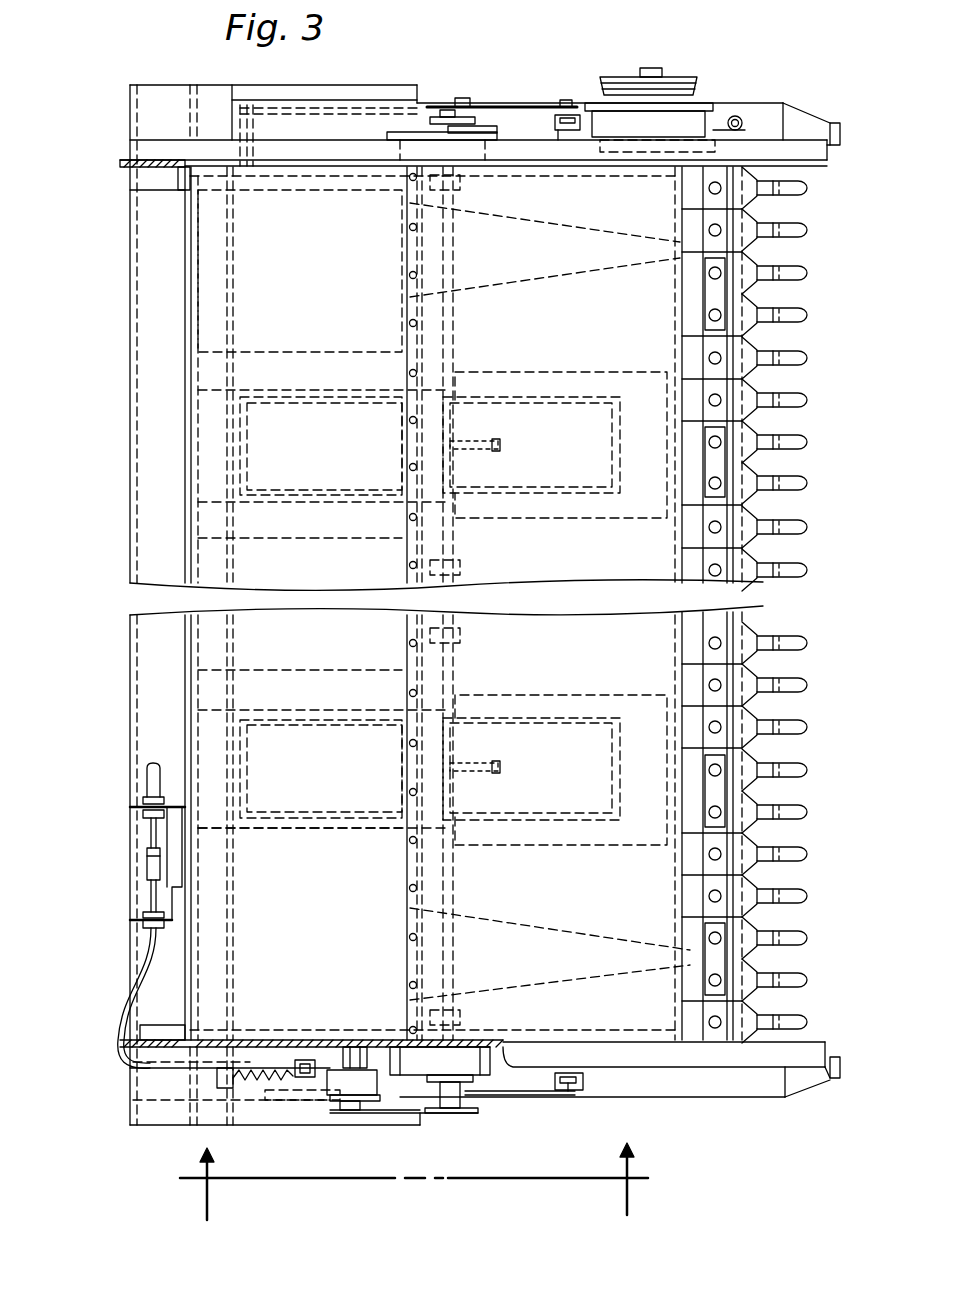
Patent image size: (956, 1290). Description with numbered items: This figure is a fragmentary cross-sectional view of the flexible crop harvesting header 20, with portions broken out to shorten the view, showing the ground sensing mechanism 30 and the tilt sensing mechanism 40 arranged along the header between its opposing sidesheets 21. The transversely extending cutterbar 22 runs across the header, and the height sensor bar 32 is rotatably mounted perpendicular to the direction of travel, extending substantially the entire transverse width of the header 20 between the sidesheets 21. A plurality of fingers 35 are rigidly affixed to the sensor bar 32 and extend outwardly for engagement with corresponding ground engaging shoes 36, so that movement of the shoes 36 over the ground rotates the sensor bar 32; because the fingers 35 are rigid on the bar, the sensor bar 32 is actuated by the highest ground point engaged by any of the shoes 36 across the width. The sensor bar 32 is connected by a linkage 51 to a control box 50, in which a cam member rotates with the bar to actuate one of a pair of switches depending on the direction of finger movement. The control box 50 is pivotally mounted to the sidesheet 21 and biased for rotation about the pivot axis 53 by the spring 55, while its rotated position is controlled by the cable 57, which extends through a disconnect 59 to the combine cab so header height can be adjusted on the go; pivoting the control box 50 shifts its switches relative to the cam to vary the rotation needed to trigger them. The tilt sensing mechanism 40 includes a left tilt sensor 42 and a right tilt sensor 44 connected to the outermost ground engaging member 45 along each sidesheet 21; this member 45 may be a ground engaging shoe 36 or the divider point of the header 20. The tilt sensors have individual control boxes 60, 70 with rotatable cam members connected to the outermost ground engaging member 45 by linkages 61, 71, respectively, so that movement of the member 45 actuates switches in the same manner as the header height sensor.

The flexible crop harvesting header 20 is at (492, 50).
The sidesheet 21 is at (345, 166).
The cutterbar 22 is at (768, 420).
The ground sensing mechanism 30 is at (630, 1122).
The height sensor bar 32 is at (463, 277).
The fingers 35 is at (497, 447).
The ground engaging shoe 36 is at (556, 395).
The tilt sensing mechanism 40 is at (549, 86).
The left tilt sensor 42 is at (556, 119).
The right tilt sensor 44 is at (557, 1092).
The outermost ground engaging member 45 is at (745, 118).
The control box 50 is at (366, 1062).
The linkage 51 is at (420, 1116).
The pivot axis 53 is at (352, 1048).
The spring 55 is at (297, 1083).
The cable 57 is at (134, 1000).
The disconnect 59 is at (150, 862).
The control box 60 is at (400, 131).
The linkage 61 is at (493, 114).
The control box 70 is at (470, 1055).
The linkage 71 is at (492, 1085).